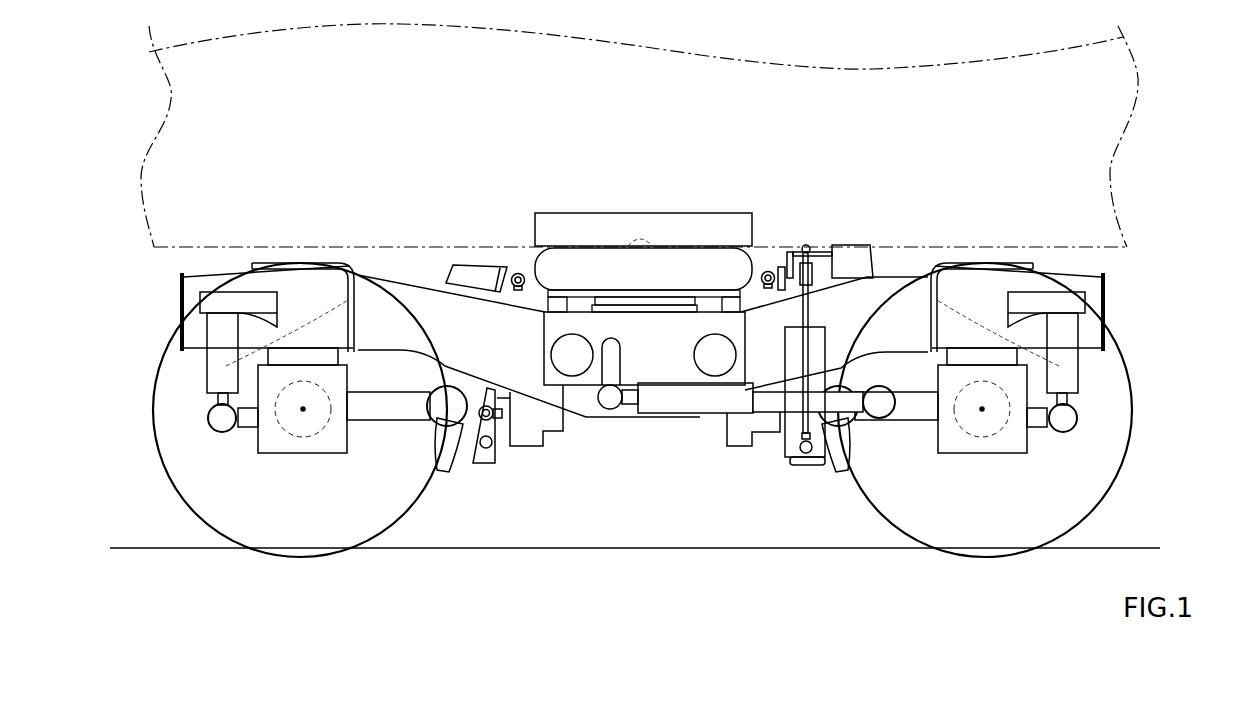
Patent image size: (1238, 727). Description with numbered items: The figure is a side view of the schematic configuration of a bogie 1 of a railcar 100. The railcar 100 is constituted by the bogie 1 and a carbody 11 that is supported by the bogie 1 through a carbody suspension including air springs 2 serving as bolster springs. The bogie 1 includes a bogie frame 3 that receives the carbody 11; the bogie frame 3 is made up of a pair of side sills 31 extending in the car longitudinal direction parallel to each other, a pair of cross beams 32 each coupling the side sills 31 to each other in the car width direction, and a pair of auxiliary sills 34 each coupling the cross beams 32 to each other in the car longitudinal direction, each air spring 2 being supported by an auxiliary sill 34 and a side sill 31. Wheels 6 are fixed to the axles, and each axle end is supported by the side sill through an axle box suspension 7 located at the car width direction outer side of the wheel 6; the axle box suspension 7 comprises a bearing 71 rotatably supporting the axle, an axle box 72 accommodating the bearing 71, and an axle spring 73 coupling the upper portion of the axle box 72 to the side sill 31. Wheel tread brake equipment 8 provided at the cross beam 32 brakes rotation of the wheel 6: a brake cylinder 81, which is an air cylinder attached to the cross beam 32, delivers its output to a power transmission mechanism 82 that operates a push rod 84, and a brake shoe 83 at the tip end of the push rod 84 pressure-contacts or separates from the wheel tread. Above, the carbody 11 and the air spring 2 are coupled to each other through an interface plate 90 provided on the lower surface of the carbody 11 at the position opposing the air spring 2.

The railcar 100 is at (1178, 198).
The carbody 11 is at (666, 219).
The bogie 1 is at (647, 375).
The interface plate 90 is at (550, 212).
The air spring 2 is at (764, 258).
The bogie frame 3 is at (676, 452).
The side sill 31 is at (612, 418).
The cross beam 32 is at (572, 378).
The auxiliary sill 34 is at (612, 406).
The wheel 6 is at (180, 493).
The axle box suspension 7 is at (333, 463).
The bearing 71 is at (292, 432).
The axle box 72 is at (303, 455).
The axle spring 73 is at (267, 355).
The wheel tread brake equipment 8 is at (498, 476).
The brake cylinder 81 is at (476, 265).
The power transmission mechanism 82 is at (538, 447).
The brake shoe 83 is at (445, 470).
The push rod 84 is at (497, 425).